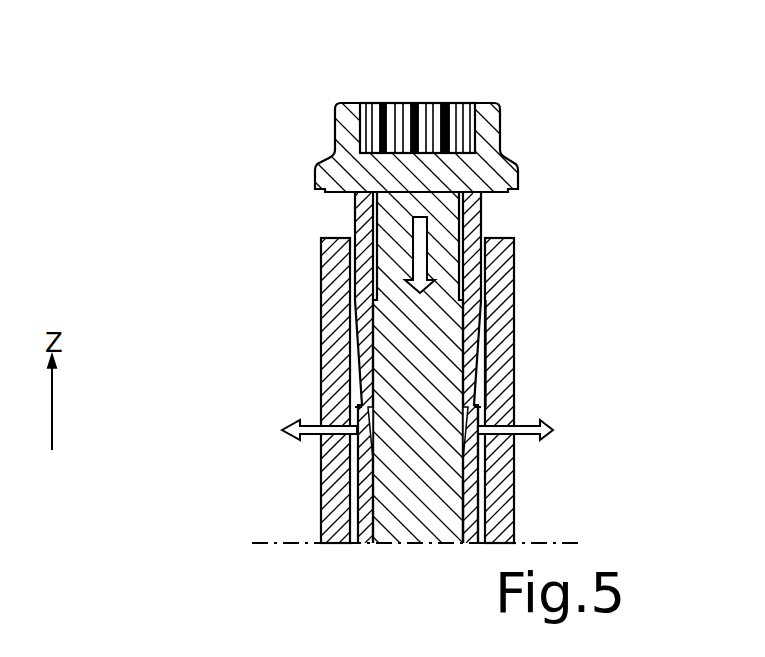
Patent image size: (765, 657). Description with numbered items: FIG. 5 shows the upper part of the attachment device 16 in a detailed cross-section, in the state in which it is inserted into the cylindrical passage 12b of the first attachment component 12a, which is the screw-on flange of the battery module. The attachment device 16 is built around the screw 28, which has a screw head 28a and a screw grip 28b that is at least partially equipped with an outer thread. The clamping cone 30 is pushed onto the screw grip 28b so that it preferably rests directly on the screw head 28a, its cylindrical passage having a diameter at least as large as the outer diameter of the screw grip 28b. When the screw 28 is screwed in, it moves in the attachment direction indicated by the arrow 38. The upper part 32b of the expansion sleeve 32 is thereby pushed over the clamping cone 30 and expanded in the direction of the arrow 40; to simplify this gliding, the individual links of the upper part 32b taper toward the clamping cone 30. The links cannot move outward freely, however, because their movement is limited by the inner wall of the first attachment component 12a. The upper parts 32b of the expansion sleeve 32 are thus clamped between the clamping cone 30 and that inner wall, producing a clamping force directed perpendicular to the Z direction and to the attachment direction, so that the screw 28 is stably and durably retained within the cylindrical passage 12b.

The attachment device 16 is at (341, 89).
The screw 28 is at (489, 95).
The screw head 28a is at (483, 134).
The screw grip 28b is at (443, 362).
The clamping cone 30 is at (468, 290).
The expansion sleeve 32 is at (470, 510).
The upper part of the expansion sleeve 32b is at (479, 448).
The arrow 38 is at (415, 227).
The first attachment component 12a is at (335, 305).
The cylindrical passage 12b is at (360, 400).
The arrow 40 is at (305, 425).